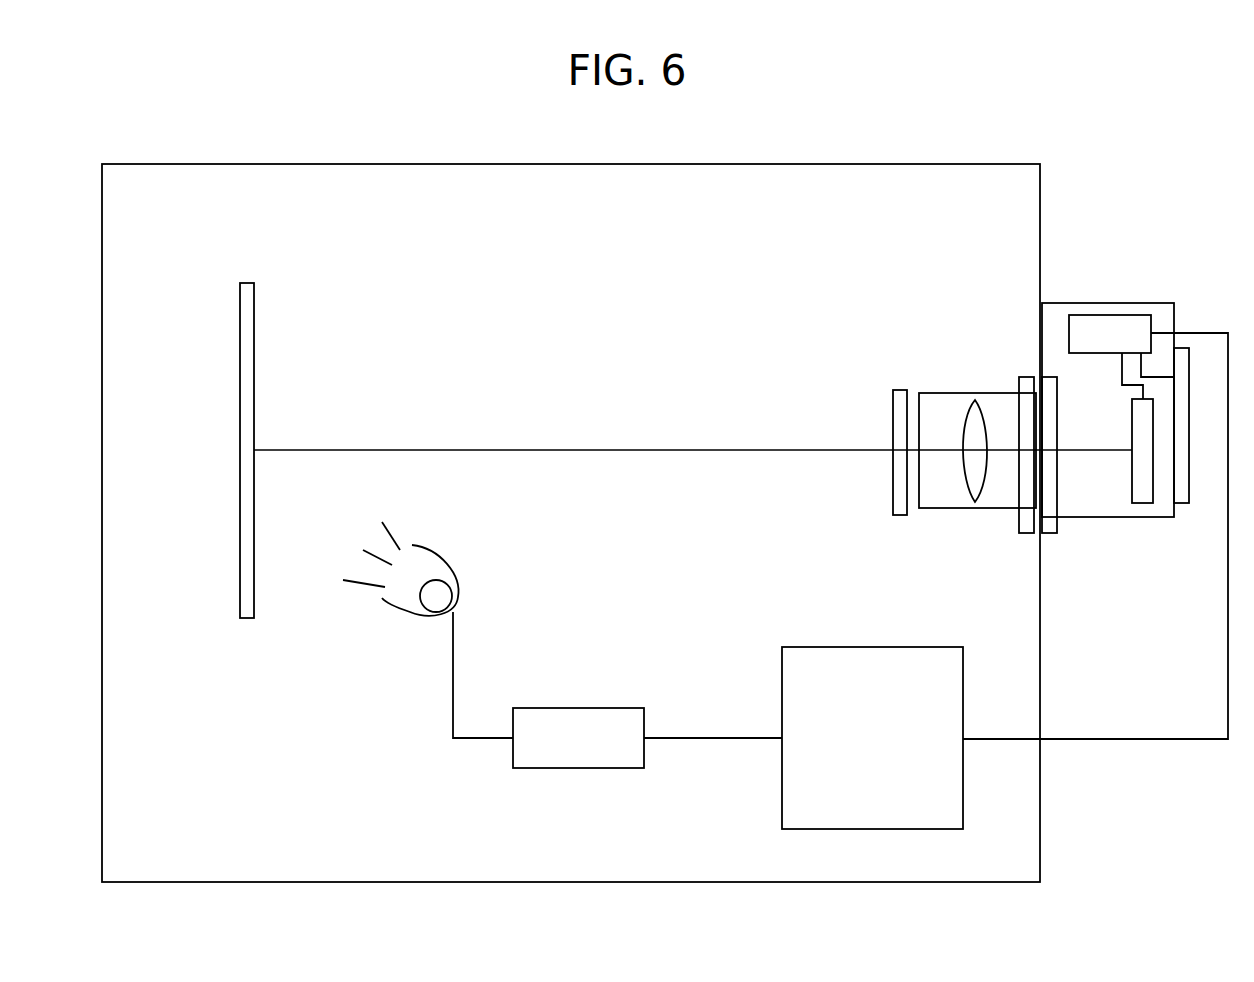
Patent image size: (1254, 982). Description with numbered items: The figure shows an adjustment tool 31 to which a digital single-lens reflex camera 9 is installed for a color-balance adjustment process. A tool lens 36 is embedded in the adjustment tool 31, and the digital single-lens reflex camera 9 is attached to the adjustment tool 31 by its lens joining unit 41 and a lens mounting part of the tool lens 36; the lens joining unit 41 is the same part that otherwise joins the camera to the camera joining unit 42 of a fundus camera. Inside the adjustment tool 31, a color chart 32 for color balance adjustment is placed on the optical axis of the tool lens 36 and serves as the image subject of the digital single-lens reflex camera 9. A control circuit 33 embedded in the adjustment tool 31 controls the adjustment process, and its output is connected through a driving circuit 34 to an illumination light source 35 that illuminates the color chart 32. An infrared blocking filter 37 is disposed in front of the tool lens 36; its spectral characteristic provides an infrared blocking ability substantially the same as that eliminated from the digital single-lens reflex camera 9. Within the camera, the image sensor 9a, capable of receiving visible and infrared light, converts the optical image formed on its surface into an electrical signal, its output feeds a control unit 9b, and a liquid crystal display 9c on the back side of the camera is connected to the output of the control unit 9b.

The adjustment tool 31 is at (263, 164).
The color chart 32 is at (245, 283).
The control circuit 33 is at (808, 647).
The driving circuit 34 is at (540, 768).
The illumination light source 35 is at (388, 600).
The tool lens 36 is at (973, 393).
The infrared blocking filter 37 is at (898, 390).
The lens joining unit 41 is at (1047, 377).
The camera joining unit 42 is at (1027, 377).
The digital single-lens reflex camera 9 is at (1158, 303).
The image sensor 9a is at (1142, 503).
The control unit 9b is at (1103, 315).
The liquid crystal display 9c is at (1183, 503).